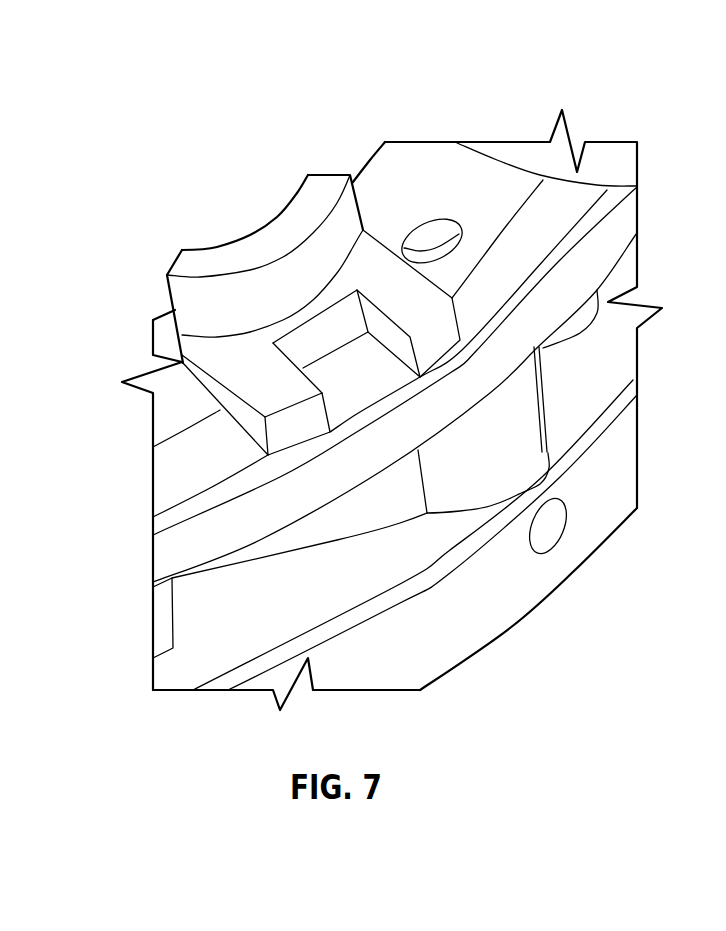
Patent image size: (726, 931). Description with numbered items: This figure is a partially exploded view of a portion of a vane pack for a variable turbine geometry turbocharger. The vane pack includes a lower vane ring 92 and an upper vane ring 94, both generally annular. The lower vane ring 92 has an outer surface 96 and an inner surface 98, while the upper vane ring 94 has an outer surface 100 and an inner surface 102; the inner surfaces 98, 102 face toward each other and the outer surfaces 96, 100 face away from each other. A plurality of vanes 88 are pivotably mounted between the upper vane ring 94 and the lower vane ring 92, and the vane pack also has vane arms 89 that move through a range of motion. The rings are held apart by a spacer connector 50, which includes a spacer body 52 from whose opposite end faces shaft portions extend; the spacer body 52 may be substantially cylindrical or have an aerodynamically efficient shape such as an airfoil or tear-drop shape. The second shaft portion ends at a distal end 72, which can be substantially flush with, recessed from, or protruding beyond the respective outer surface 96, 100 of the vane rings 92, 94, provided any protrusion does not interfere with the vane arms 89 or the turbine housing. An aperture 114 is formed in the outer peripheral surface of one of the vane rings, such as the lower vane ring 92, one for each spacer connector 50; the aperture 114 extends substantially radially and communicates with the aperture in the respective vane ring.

The spacer connector 50 is at (548, 402).
The spacer body 52 is at (520, 392).
The distal end 72 is at (432, 242).
The vanes 88 is at (360, 513).
The vane arms 89 is at (327, 195).
The lower vane ring 92 is at (411, 695).
The upper vane ring 94 is at (150, 552).
The outer surface 96 is at (505, 640).
The inner surface 98 is at (270, 631).
The outer surface 100 is at (182, 484).
The inner surface 102 is at (200, 567).
The aperture 114 is at (547, 533).